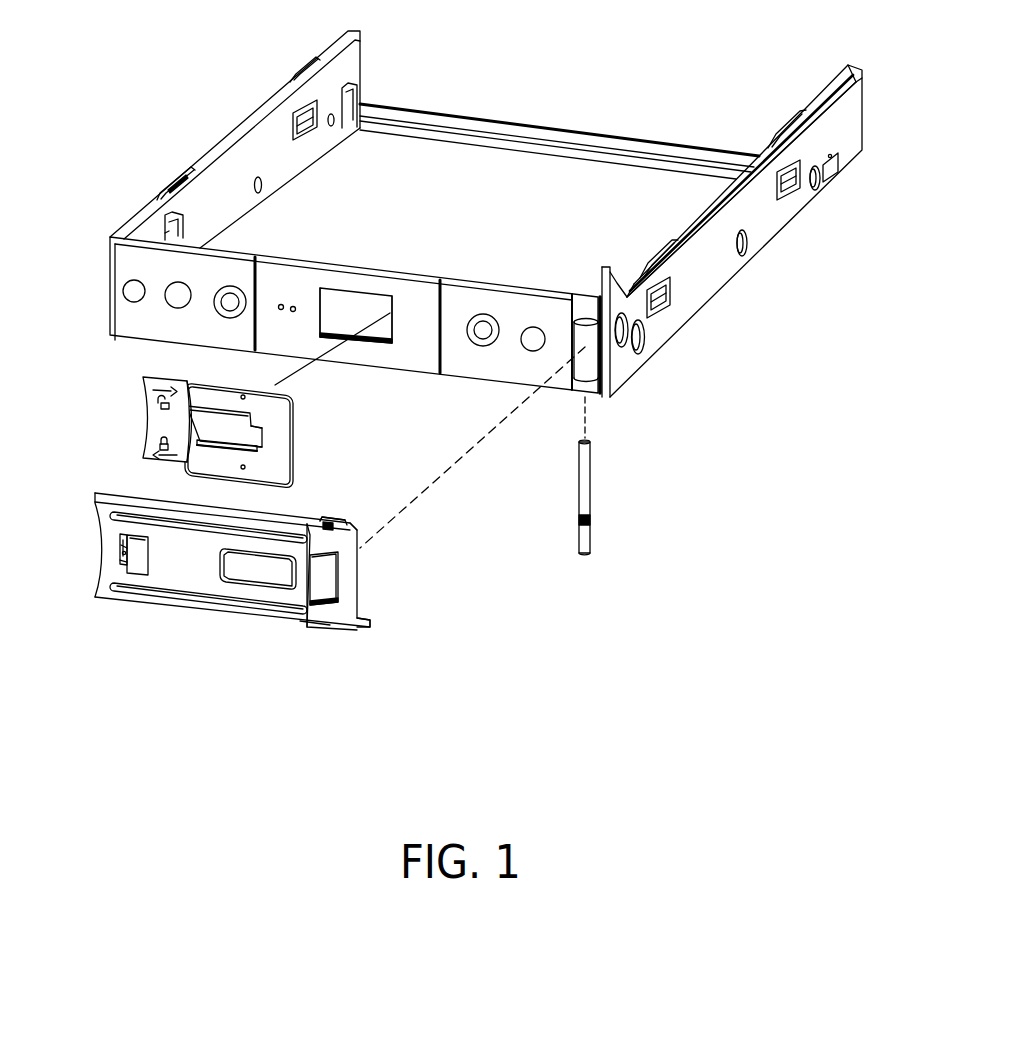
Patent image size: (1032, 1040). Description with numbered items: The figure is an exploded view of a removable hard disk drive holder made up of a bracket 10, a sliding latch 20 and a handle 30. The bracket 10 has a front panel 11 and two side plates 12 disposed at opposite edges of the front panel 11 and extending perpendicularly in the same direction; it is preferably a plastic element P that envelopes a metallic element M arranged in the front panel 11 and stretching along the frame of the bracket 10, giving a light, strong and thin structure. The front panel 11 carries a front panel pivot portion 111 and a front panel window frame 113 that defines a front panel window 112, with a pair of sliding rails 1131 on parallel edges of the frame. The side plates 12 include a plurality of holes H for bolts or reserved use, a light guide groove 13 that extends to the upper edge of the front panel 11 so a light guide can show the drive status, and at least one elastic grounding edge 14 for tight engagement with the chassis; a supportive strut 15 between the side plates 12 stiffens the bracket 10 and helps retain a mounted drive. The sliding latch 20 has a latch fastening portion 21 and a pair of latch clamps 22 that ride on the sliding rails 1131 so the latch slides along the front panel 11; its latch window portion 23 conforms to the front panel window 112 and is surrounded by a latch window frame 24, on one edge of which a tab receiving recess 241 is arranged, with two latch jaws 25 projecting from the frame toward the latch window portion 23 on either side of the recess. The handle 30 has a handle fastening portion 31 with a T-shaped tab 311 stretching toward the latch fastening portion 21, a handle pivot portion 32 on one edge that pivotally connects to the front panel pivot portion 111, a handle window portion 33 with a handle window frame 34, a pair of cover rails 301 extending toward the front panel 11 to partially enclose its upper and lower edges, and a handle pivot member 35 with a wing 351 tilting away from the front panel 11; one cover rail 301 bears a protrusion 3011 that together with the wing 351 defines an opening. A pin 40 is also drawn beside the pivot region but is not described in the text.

The bracket 10 is at (465, 233).
The front panel 11 is at (415, 350).
The front panel pivot portion 111 is at (610, 366).
The front panel window 112 is at (353, 303).
The front panel window frame 113 is at (320, 303).
The sliding rail 1131 is at (386, 333).
The side plate 12 is at (252, 147).
The light guide groove 13 is at (740, 194).
The elastic grounding edge 14 is at (790, 130).
The supportive strut 15 is at (533, 125).
The hole H is at (750, 250).
The metallic element M is at (165, 287).
The plastic element P is at (218, 316).
The sliding latch 20 is at (222, 417).
The latch fastening portion 21 is at (378, 430).
The latch clamp 22 is at (220, 442).
The latch window portion 23 is at (167, 427).
The latch window frame 24 is at (221, 406).
The tab receiving recess 241 is at (262, 446).
The latch jaw 25 is at (260, 414).
The handle 30 is at (288, 618).
The cover rail 301 is at (350, 527).
The protrusion 3011 is at (372, 625).
The handle fastening portion 31 is at (146, 618).
The T-shaped tab 311 is at (130, 553).
The handle pivot portion 32 is at (327, 627).
The handle window portion 33 is at (141, 548).
The handle window frame 34 is at (127, 570).
The handle pivot member 35 is at (391, 576).
The wing 351 is at (350, 580).
The pivot pin 40 is at (590, 485).